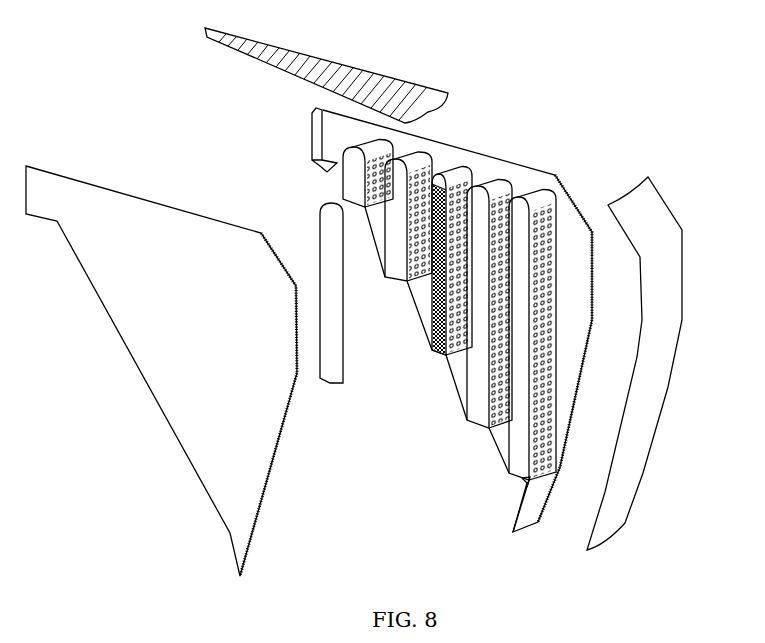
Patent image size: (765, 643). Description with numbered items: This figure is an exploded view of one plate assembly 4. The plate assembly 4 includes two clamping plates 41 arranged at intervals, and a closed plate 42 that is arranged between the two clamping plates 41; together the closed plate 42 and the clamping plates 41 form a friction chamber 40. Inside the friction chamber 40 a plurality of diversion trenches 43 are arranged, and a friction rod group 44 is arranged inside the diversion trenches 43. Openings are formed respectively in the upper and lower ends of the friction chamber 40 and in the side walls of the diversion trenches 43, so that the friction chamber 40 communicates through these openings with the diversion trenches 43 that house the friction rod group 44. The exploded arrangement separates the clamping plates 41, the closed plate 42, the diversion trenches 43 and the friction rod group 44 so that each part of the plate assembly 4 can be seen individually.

The plate assembly 4 is at (557, 181).
The friction chamber 40 is at (293, 220).
The clamping plate 41 is at (327, 143).
The closed plate 42 is at (437, 90).
The diversion trench 43 is at (522, 458).
The friction rod group 44 is at (433, 352).